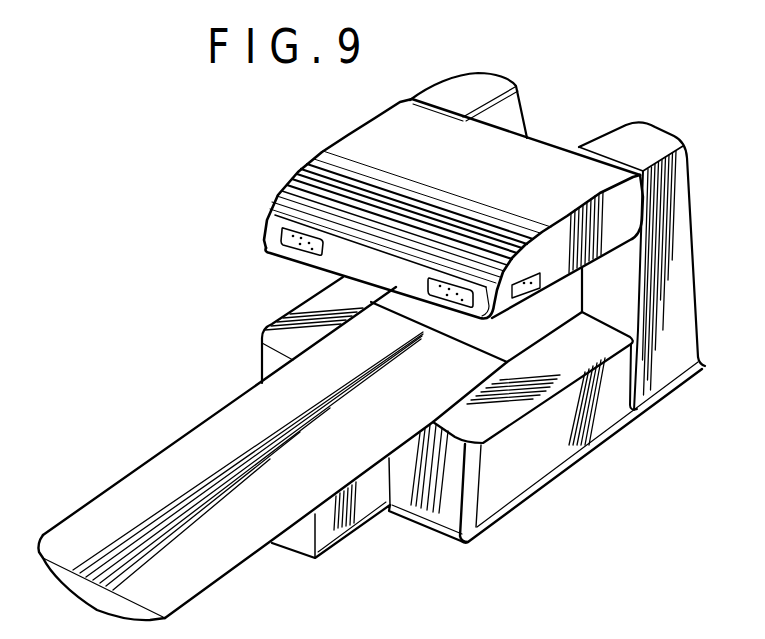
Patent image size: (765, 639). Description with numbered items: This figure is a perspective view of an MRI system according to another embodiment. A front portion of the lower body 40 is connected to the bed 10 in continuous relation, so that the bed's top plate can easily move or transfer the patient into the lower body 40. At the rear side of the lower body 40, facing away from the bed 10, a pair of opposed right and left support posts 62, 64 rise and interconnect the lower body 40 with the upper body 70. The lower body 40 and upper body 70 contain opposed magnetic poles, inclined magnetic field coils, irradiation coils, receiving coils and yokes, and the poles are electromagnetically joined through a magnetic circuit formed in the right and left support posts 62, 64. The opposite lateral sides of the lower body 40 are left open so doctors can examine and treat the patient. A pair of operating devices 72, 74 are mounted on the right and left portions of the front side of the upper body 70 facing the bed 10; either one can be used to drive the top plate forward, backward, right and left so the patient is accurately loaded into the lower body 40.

The bed 10 is at (148, 467).
The lower body 40 is at (268, 327).
The right support post 62 is at (688, 346).
The left support post 64 is at (498, 84).
The upper body 70 is at (333, 150).
The operating device 72 is at (478, 314).
The operating device 74 is at (290, 249).